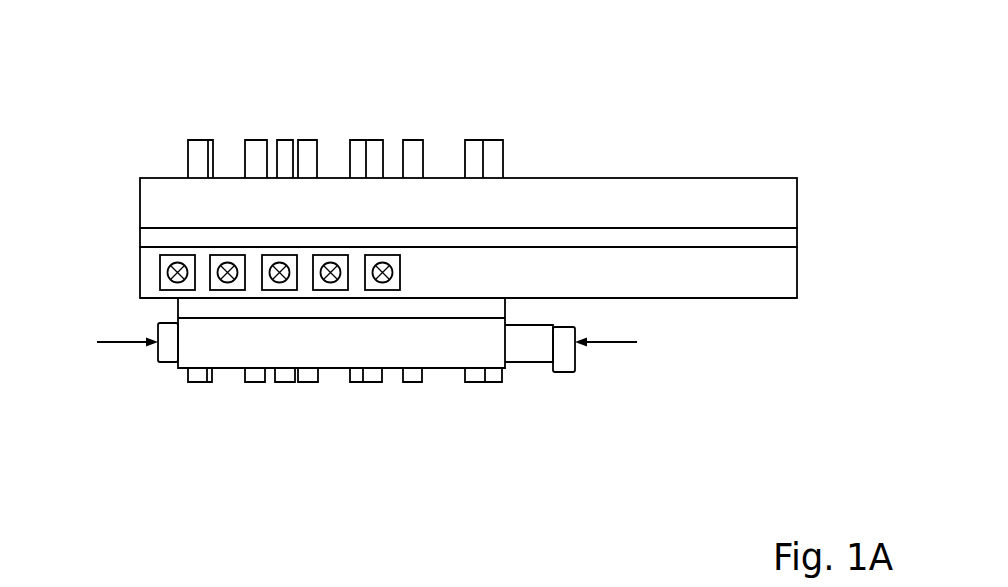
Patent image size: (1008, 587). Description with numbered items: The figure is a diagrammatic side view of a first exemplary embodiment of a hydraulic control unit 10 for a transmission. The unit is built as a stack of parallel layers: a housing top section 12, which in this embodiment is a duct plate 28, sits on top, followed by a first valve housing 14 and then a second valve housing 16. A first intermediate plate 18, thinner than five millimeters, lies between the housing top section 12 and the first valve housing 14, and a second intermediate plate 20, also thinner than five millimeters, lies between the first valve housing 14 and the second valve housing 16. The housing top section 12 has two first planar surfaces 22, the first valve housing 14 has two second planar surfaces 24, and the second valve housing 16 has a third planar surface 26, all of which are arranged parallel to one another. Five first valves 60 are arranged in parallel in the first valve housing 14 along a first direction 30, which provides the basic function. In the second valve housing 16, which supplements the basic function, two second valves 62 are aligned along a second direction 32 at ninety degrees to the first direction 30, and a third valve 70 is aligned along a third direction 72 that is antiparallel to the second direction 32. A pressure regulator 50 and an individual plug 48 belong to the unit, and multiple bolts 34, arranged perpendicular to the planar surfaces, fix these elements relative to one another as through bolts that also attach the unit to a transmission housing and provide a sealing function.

The hydraulic control unit 10 is at (778, 128).
The housing top section 12 is at (515, 264).
The duct plate 28 is at (672, 203).
The first valve housing 14 is at (777, 273).
The second valve housing 16 is at (433, 342).
The first intermediate plate 18 is at (772, 238).
The second intermediate plate 20 is at (337, 307).
The first planar surface 22 is at (528, 173).
The second planar surface 24 is at (727, 298).
The third planar surface 26 is at (200, 318).
The first direction 30 is at (277, 290).
The second direction 32 is at (613, 343).
The bolt 34 is at (371, 157).
The individual plug 48 is at (567, 360).
The pressure regulator 50 is at (546, 421).
The second valve 62 is at (525, 347).
The first valve 60 is at (213, 257).
The third valve 70 is at (167, 348).
The third direction 72 is at (120, 337).